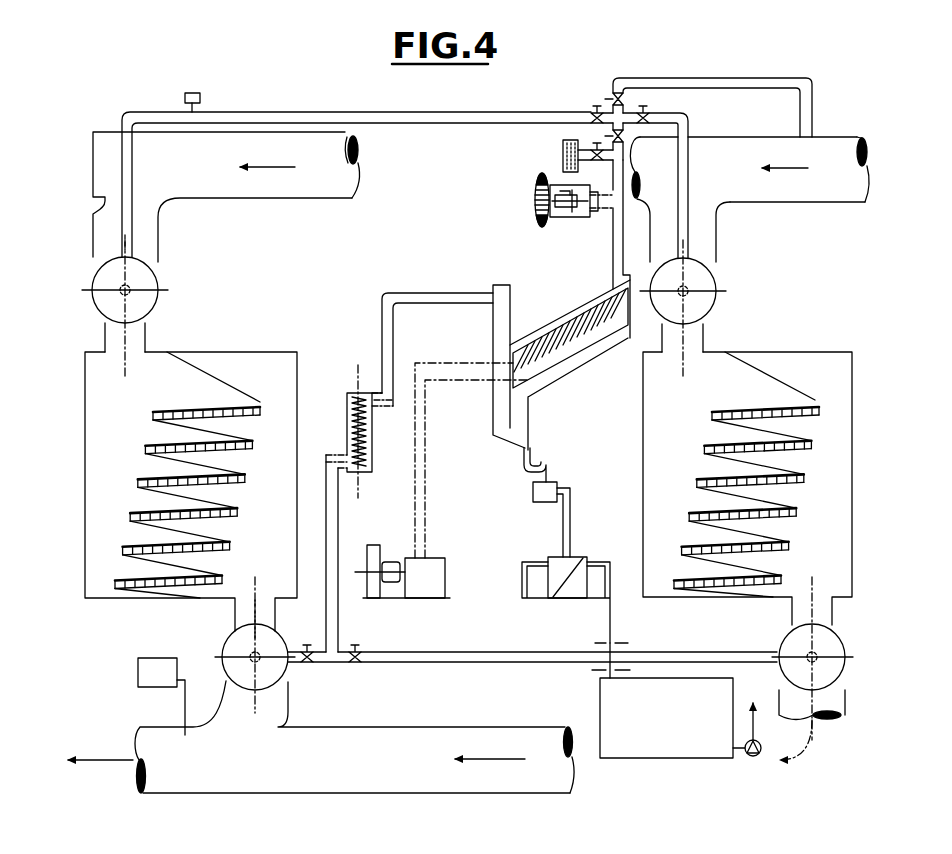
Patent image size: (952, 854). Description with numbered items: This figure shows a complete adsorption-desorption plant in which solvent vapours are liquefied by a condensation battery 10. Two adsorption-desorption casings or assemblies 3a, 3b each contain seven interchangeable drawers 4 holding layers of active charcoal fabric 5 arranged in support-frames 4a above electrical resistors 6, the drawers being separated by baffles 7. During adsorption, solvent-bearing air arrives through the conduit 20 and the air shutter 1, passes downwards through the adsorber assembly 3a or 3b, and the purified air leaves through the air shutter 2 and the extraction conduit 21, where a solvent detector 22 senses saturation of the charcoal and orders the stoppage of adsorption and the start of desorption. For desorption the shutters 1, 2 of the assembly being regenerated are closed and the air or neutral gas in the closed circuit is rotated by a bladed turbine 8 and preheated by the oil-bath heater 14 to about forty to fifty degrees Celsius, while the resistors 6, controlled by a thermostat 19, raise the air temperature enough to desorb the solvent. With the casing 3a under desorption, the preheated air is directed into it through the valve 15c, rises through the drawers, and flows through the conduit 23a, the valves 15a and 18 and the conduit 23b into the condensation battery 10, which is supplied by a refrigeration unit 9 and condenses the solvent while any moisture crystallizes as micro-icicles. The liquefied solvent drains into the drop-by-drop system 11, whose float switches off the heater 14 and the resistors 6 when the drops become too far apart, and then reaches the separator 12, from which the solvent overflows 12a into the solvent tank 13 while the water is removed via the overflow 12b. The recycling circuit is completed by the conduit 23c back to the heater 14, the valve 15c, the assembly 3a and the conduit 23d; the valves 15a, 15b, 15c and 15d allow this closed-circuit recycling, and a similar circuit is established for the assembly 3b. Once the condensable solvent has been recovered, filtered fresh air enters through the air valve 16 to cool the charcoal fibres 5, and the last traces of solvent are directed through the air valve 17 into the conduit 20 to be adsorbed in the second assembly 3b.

The air shutter 1 is at (113, 282).
The air shutter 2 is at (242, 670).
The adsorption-desorption casing 3a is at (85, 423).
The adsorption-desorption casing 3b is at (852, 413).
The interchangeable drawer 4 is at (133, 441).
The support-frame 4a is at (170, 402).
The layer of active charcoal fabric 5 is at (142, 538).
The electrical resistor 6 is at (147, 505).
The baffle 7 is at (143, 553).
The bladed turbine 8 is at (538, 190).
The refrigeration unit 9 is at (415, 573).
The condensation battery 10 is at (585, 312).
The drop-by-drop system 11 is at (550, 490).
The separator 12 is at (563, 567).
The solvent overflow 12a is at (614, 625).
The water overflow 12b is at (522, 582).
The solvent tank 13 is at (630, 712).
The oil-bath heater 14 is at (355, 395).
The valve 15a is at (593, 113).
The valve 15b is at (638, 113).
The valve 15c is at (307, 665).
The valve 15d is at (355, 665).
The air valve 16 is at (561, 157).
The air valve 17 is at (632, 98).
The valve 18 is at (630, 135).
The thermostat 19 is at (201, 96).
The conduit 20 is at (870, 172).
The extraction conduit 21 is at (188, 755).
The solvent detector 22 is at (141, 668).
The conduit 23a is at (333, 118).
The conduit 23b is at (613, 240).
The conduit 23c is at (447, 296).
The conduit 23d is at (126, 229).